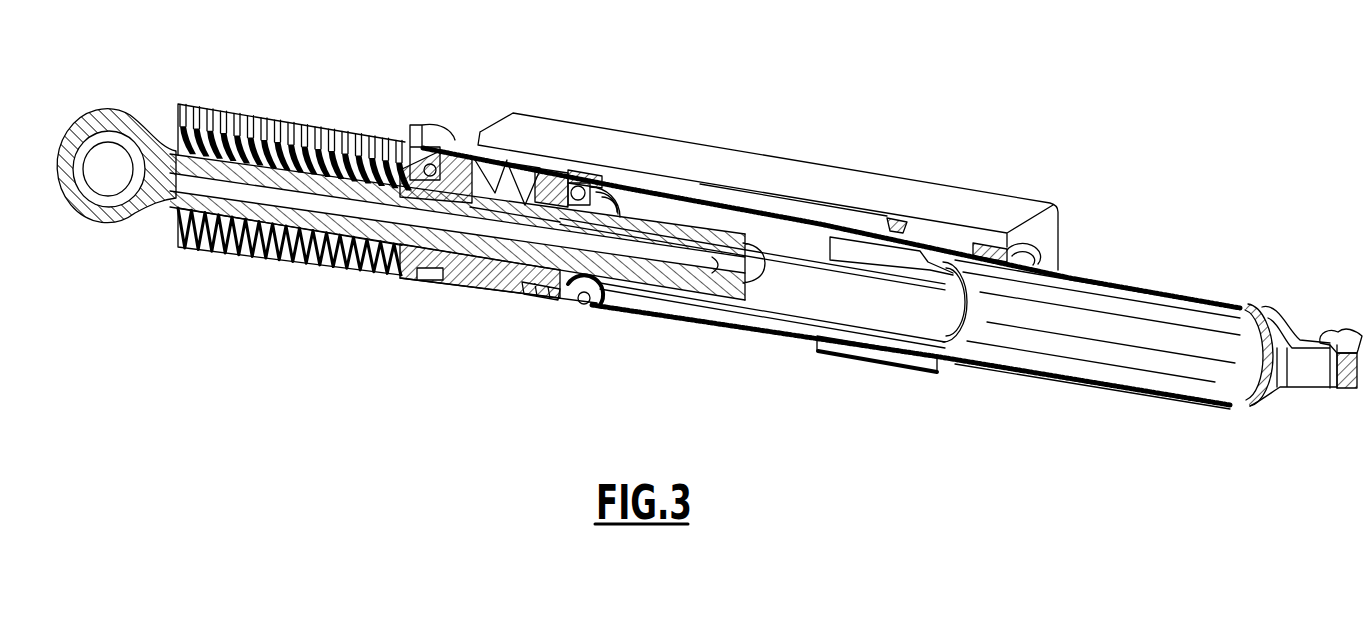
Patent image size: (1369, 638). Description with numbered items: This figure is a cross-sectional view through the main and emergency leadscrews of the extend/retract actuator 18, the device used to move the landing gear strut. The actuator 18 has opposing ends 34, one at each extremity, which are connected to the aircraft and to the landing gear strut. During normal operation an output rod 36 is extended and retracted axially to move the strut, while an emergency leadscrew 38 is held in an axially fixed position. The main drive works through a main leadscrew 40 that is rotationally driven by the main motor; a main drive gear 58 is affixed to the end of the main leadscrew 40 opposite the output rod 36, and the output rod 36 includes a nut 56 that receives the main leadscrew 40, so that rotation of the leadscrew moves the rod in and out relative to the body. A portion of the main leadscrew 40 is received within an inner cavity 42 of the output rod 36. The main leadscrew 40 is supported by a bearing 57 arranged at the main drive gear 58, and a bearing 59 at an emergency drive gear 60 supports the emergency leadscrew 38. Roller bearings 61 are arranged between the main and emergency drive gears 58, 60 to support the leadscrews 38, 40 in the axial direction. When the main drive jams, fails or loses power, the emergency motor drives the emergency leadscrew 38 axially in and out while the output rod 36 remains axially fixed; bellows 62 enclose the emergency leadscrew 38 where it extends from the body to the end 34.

The extend/retract actuator 18 is at (1024, 60).
The opposing ends 34 is at (100, 215).
The output rod 36 is at (1166, 292).
The emergency leadscrew 38 is at (712, 240).
The main leadscrew 40 is at (795, 312).
The inner cavity 42 is at (1101, 363).
The nut 56 is at (945, 338).
The bearing 57 is at (580, 307).
The main drive gear 58 is at (533, 298).
The bearing 59 is at (435, 137).
The emergency drive gear 60 is at (458, 152).
The roller bearings 61 is at (508, 195).
The bellows 62 is at (205, 240).